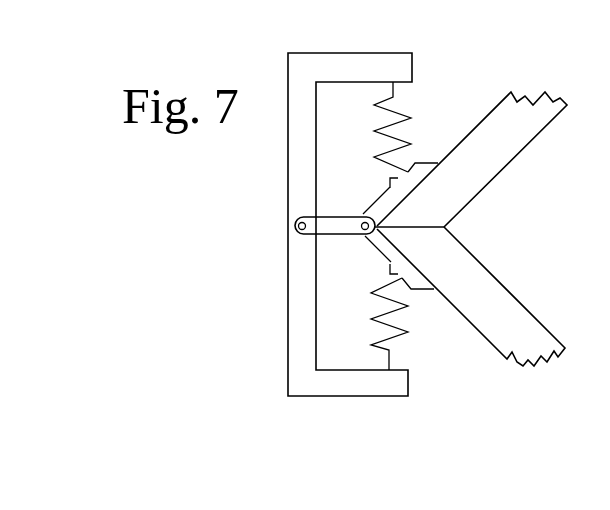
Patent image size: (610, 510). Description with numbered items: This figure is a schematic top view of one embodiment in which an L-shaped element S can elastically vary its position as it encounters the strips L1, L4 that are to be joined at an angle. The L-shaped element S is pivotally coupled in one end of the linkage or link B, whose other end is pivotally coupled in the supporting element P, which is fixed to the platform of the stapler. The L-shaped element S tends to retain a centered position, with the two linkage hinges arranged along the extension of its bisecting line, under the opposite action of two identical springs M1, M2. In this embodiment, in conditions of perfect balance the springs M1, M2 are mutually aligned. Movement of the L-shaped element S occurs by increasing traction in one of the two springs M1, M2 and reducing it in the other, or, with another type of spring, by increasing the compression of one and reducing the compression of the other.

The supporting element P is at (296, 297).
The first spring M1 is at (369, 127).
The second spring M2 is at (367, 324).
The linkage or link B is at (343, 225).
The L-shaped element S is at (425, 168).
The strip L1 is at (494, 160).
The strip L4 is at (490, 298).